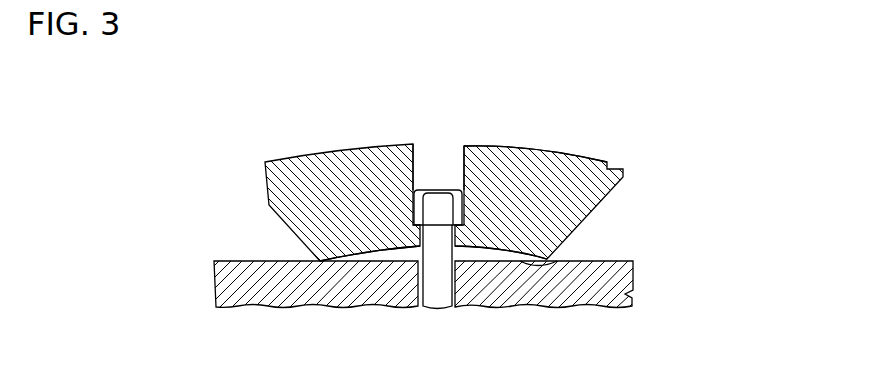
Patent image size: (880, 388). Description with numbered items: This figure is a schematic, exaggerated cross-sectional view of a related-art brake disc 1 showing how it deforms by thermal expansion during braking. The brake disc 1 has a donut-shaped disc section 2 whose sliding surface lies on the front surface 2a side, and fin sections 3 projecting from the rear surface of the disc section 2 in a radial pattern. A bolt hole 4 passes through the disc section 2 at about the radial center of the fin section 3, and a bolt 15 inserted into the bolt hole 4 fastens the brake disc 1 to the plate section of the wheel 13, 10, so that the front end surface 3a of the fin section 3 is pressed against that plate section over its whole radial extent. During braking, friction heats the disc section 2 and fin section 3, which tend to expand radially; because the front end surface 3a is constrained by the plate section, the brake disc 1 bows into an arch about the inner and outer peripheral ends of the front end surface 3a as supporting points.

The brake disc 1 is at (253, 152).
The disc section 2 is at (623, 184).
The front surface 2a is at (560, 154).
The fin section 3 is at (554, 247).
The front end surface 3a is at (558, 262).
The bolt hole 4 is at (423, 163).
The bolt 15 is at (442, 198).
The base plate / machine table 13, 10 is at (633, 300).